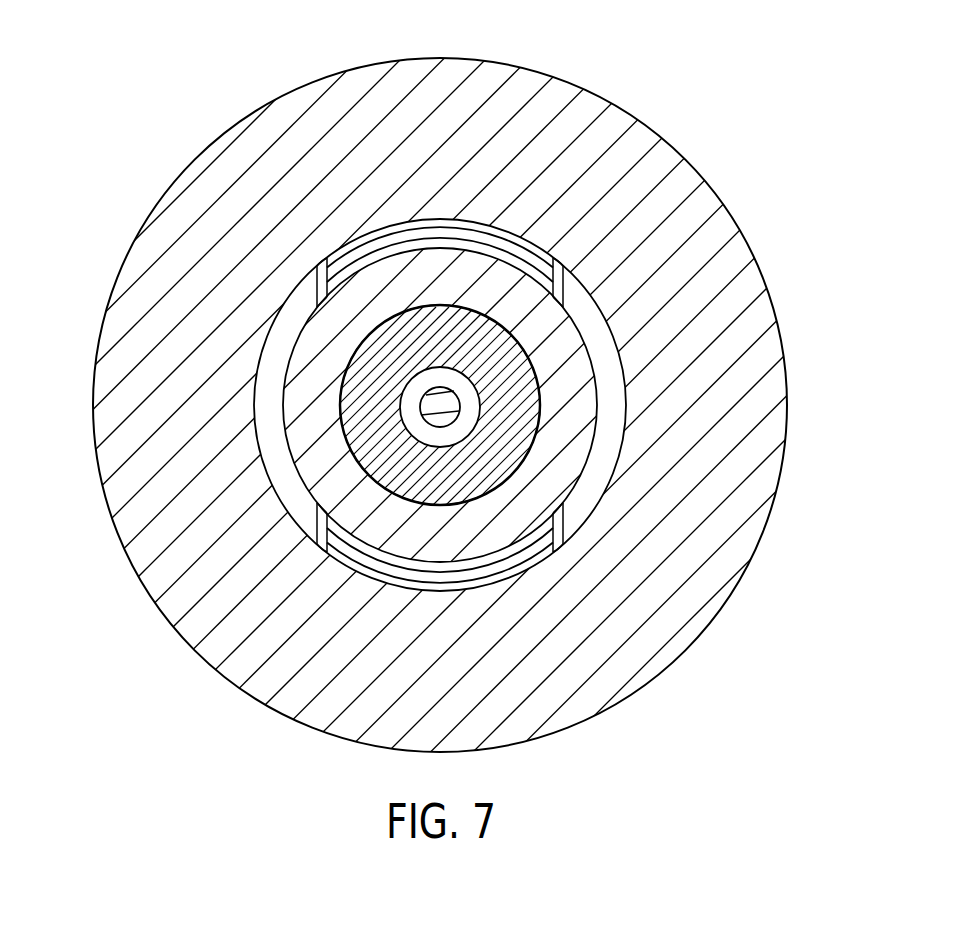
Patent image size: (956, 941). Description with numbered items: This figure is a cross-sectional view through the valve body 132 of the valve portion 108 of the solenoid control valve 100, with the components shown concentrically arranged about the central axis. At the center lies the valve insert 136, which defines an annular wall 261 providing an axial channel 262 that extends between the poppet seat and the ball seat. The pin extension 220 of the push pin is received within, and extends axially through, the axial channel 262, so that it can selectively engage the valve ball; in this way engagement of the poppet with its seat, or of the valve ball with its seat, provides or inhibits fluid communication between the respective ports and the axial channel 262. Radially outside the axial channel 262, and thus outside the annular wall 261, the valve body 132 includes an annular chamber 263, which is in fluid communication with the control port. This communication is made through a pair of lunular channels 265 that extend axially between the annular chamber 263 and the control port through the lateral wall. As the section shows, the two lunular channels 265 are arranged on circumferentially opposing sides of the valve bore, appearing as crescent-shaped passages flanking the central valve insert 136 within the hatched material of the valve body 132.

The solenoid control valve 100 is at (148, 36).
The valve portion 108 is at (140, 197).
The valve body 132 is at (638, 132).
The valve insert 136 is at (513, 402).
The pin extension 220 is at (447, 391).
The annular wall 261 is at (510, 440).
The axial channel 262 is at (427, 432).
The annular chamber 263 is at (537, 560).
The lunular channels 265 is at (268, 398).